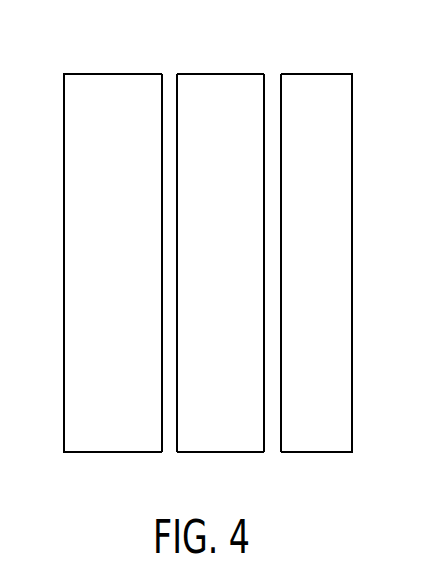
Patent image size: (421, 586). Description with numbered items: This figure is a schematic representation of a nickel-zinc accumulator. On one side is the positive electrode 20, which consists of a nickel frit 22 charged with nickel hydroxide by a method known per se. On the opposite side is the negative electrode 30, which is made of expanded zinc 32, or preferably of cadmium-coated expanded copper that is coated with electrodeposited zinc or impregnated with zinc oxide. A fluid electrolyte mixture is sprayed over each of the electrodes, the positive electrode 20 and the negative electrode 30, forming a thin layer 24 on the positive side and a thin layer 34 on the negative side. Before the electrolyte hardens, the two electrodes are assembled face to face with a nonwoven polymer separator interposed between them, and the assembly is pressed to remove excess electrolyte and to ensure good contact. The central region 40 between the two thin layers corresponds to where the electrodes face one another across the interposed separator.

The positive electrode 20 is at (134, 62).
The nickel frit 22 is at (77, 166).
The thin layer 24 is at (167, 437).
The negative electrode 30 is at (336, 62).
The expanded zinc 32 is at (335, 178).
The thin layer 34 is at (271, 440).
The electrolyte layer 40 is at (226, 433).